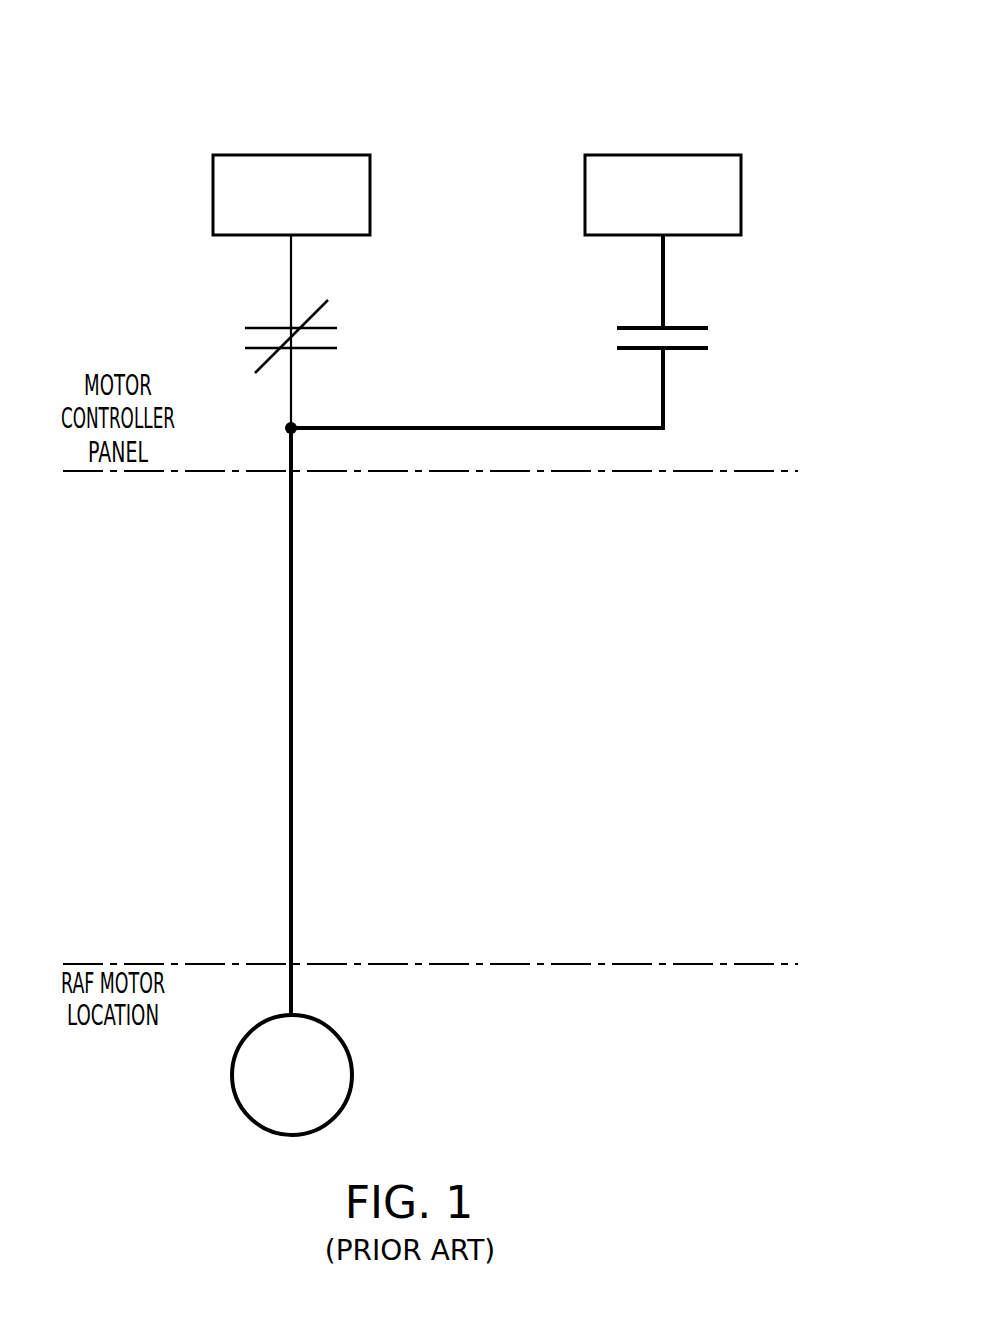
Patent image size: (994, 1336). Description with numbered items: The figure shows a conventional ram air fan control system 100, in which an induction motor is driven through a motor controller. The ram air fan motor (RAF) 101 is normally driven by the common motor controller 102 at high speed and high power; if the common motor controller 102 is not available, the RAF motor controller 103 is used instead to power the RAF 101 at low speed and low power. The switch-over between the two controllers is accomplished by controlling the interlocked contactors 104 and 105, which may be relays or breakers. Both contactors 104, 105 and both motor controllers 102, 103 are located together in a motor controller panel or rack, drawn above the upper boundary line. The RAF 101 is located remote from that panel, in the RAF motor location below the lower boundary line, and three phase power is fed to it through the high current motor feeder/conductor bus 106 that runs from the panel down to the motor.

The prior art motor control system 100 is at (755, 107).
The ram air fan motor 101 is at (262, 1131).
The common motor controller 102 is at (625, 153).
The RAF motor controller 103 is at (249, 153).
The contactor 104 is at (697, 327).
The contactor 105 is at (258, 327).
The motor feeder/conductor bus 106 is at (289, 724).